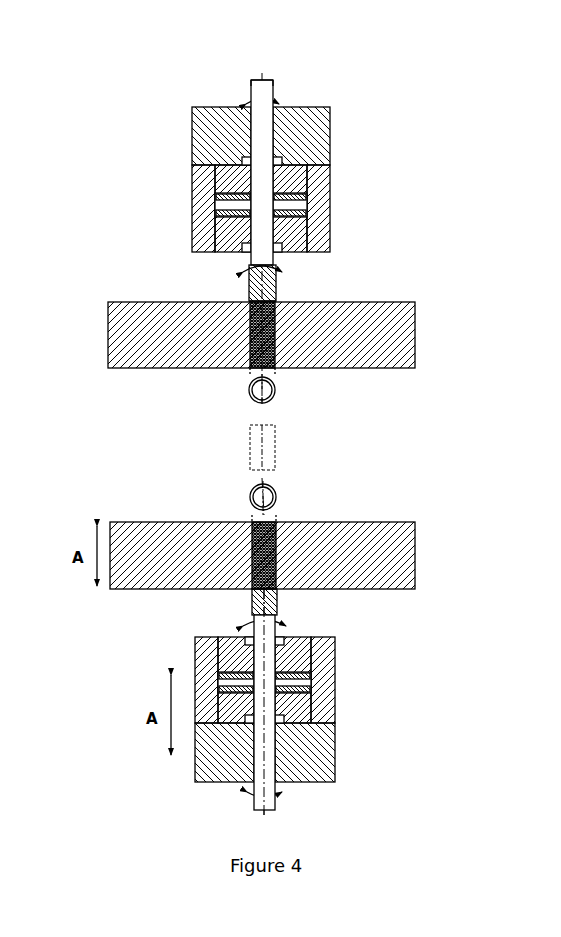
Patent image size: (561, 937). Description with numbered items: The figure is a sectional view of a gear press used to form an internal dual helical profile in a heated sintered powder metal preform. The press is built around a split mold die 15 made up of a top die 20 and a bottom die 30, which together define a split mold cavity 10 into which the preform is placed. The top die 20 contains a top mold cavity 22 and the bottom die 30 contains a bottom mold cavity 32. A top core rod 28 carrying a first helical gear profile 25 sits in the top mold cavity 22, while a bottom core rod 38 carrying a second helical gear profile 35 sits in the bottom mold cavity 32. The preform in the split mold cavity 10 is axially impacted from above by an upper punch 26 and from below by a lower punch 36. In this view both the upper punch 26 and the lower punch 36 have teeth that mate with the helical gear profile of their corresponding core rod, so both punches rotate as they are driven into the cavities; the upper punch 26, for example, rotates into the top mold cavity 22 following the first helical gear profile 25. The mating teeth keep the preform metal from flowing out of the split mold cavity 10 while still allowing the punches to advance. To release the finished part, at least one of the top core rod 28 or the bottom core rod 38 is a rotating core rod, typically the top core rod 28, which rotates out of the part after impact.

The split mold cavity 10 is at (240, 375).
The split mold die 15 is at (318, 445).
The top die 20 is at (418, 330).
The top mold cavity 22 is at (253, 373).
The first helical gear profile 25 is at (278, 392).
The upper punch 26 is at (280, 280).
The top core rod 28 is at (276, 83).
The bottom die 30 is at (418, 560).
The bottom mold cavity 32 is at (256, 518).
The second helical gear profile 35 is at (277, 515).
The lower punch 36 is at (281, 606).
The bottom core rod 38 is at (282, 803).